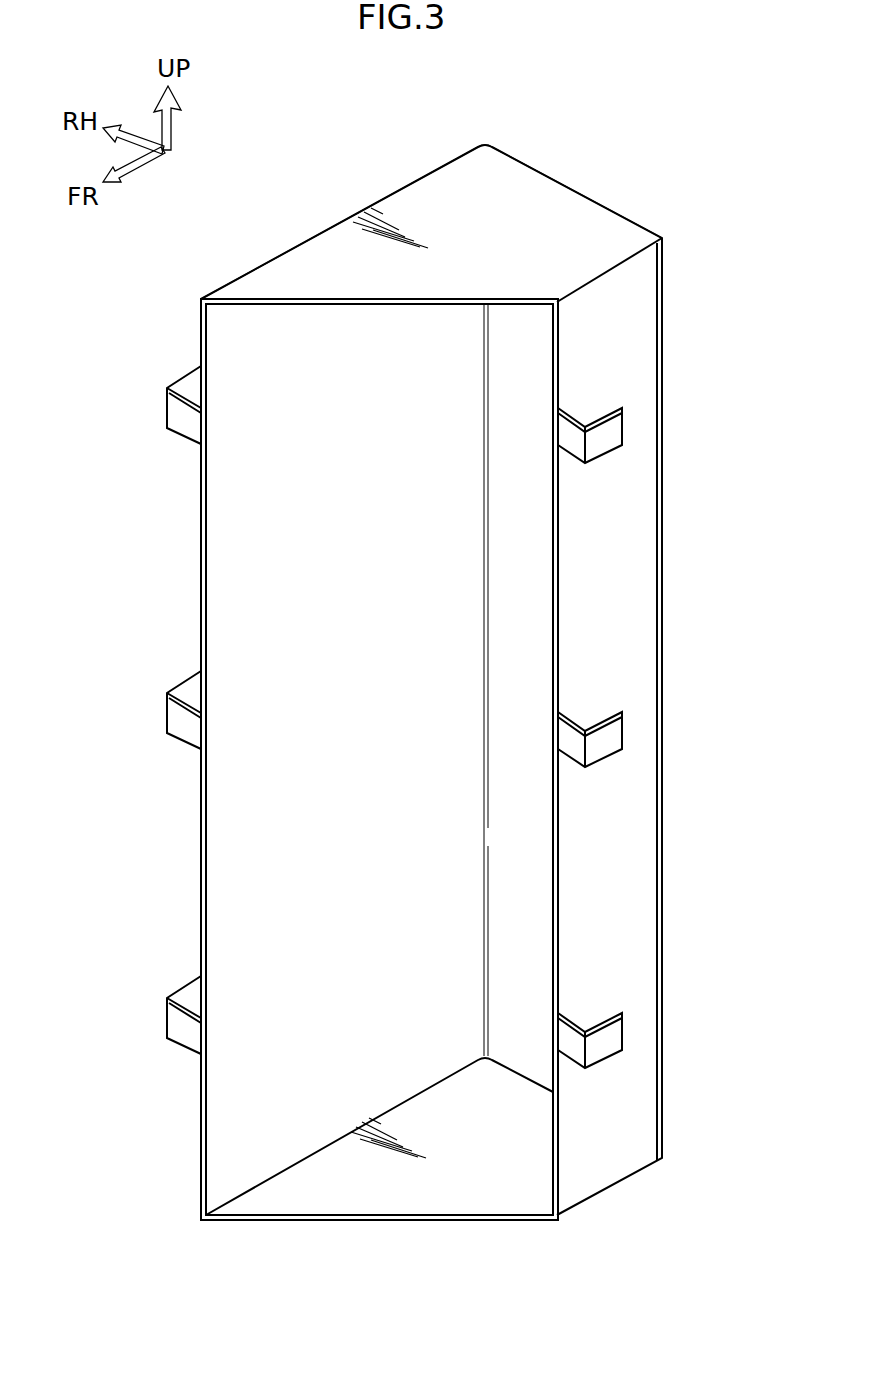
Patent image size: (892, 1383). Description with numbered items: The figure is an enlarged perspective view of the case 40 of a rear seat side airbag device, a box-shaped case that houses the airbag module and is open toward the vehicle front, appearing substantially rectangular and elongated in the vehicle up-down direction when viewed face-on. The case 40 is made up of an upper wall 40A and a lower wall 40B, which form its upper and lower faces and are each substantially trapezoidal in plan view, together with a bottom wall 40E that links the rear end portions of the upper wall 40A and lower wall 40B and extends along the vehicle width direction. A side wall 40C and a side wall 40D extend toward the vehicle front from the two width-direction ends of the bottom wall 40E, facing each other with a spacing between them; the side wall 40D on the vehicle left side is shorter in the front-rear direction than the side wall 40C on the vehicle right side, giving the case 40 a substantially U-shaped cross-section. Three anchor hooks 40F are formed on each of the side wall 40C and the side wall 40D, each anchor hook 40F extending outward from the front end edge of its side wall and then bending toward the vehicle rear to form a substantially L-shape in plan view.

The case 40 is at (600, 200).
The upper wall 40A is at (428, 197).
The lower wall 40B is at (485, 1178).
The side wall 40C is at (250, 520).
The side wall 40D is at (633, 571).
The bottom wall 40E is at (437, 812).
The anchor hooks 40F is at (167, 410).